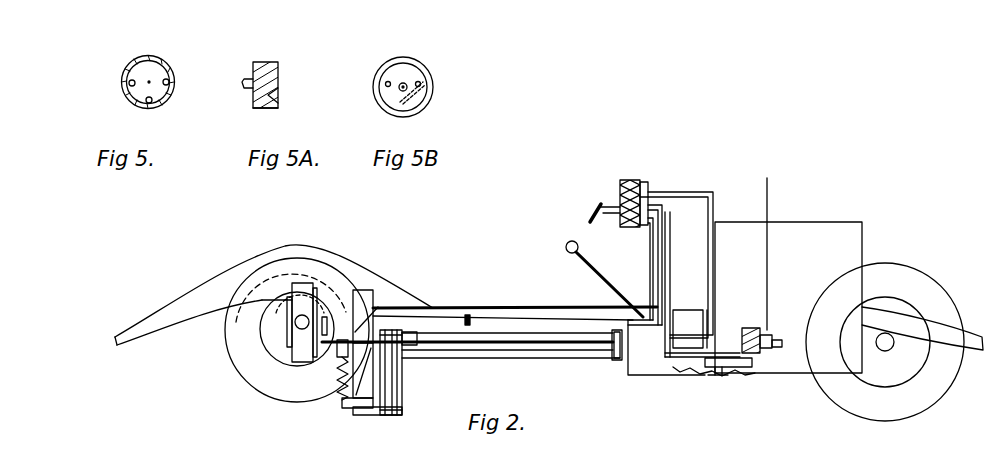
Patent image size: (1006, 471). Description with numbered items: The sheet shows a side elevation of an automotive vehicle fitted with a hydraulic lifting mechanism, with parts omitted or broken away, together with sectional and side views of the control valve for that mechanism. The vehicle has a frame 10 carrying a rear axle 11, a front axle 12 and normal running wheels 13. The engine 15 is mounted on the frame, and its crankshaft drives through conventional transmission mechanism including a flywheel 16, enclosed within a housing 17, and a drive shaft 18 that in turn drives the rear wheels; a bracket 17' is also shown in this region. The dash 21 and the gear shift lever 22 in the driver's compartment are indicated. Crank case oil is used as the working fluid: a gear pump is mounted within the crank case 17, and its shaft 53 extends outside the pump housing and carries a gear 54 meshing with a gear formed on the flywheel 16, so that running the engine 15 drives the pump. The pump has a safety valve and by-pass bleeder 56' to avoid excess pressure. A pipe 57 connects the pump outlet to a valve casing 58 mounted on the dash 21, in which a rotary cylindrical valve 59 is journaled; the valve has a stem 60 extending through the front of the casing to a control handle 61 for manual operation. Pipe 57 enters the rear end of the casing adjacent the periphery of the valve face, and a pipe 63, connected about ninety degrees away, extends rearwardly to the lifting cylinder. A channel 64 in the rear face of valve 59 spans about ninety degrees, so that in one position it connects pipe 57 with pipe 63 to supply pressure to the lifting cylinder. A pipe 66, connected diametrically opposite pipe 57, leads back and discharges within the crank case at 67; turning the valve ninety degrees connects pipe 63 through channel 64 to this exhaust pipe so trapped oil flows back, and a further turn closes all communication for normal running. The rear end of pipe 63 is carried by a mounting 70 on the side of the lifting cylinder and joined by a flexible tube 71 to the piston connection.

In FIG. 2, the frame 10 is at (148, 330).
In FIG. 2, the rear axle 11 is at (297, 327).
In FIG. 2, the front axle 12 is at (878, 346).
In FIG. 2, the running wheels 13 is at (260, 373).
In FIG. 2, the engine 15 is at (752, 227).
In FIG. 2, the flywheel 16 is at (683, 333).
In FIG. 2, the housing 17 is at (585, 368).
In FIG. 2, the bracket 17' is at (791, 386).
In FIG. 2, the drive shaft 18 is at (455, 345).
In FIG. 2, the dash 21 is at (620, 182).
In FIG. 2, the gear shift lever 22 is at (590, 270).
In FIG. 2, the shaft 53 is at (718, 370).
In FIG. 2, the gear 54 is at (722, 368).
In FIG. 2, the safety valve and by-pass bleeder 56' is at (758, 265).
In FIG. 5, the pipe 57 is at (135, 83).
In FIG. 2, the pipe 57 is at (648, 186).
In FIG. 5, the valve casing 58 is at (171, 72).
In FIG. 2, the valve casing 58 is at (622, 181).
In FIG. 5A, the rotary cylindrical valve 59 is at (253, 65).
In FIG. 5A, the stem 60 is at (246, 82).
In FIG. 2, the stem 60 is at (642, 183).
In FIG. 2, the control handle 61 is at (607, 206).
In FIG. 5, the pipe 63 is at (152, 102).
In FIG. 2, the pipe 63 is at (478, 323).
In FIG. 5A, the channel 64 is at (254, 108).
In FIG. 5, the pipe 66 is at (169, 82).
In FIG. 2, the pipe 66 is at (642, 196).
In FIG. 2, the discharge point 67 is at (630, 357).
In FIG. 2, the mounting 70 is at (398, 306).
In FIG. 2, the flexible tube 71 is at (338, 399).